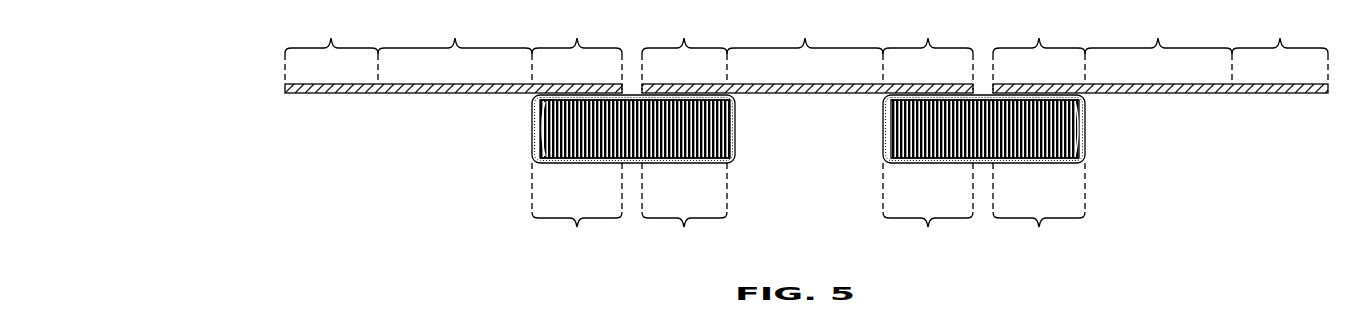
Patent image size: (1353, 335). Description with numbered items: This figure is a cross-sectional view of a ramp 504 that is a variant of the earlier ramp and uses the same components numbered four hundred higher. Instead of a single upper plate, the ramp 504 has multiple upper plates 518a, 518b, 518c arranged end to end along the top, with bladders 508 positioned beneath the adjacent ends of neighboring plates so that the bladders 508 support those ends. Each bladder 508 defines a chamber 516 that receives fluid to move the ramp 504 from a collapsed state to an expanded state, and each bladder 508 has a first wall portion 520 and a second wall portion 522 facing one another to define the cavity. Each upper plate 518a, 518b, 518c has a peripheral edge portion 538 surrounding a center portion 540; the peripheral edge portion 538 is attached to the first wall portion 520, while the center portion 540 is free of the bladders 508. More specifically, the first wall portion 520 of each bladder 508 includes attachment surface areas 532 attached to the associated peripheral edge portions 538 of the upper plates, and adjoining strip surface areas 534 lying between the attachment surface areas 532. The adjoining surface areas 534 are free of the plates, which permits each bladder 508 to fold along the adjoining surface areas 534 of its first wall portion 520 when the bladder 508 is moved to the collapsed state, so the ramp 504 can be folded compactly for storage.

The ramp 504 is at (242, 41).
The bladder 508 is at (533, 134).
The chamber 516 is at (552, 112).
The upper plate 518a is at (378, 95).
The upper plate 518b is at (831, 95).
The upper plate 518c is at (1216, 95).
The first wall portion 520 is at (600, 92).
The second wall portion 522 is at (704, 162).
The attachment surface areas 532 is at (577, 229).
The adjoining surface areas 534 is at (631, 92).
The peripheral edge portion 538 is at (331, 40).
The center portion 540 is at (455, 40).